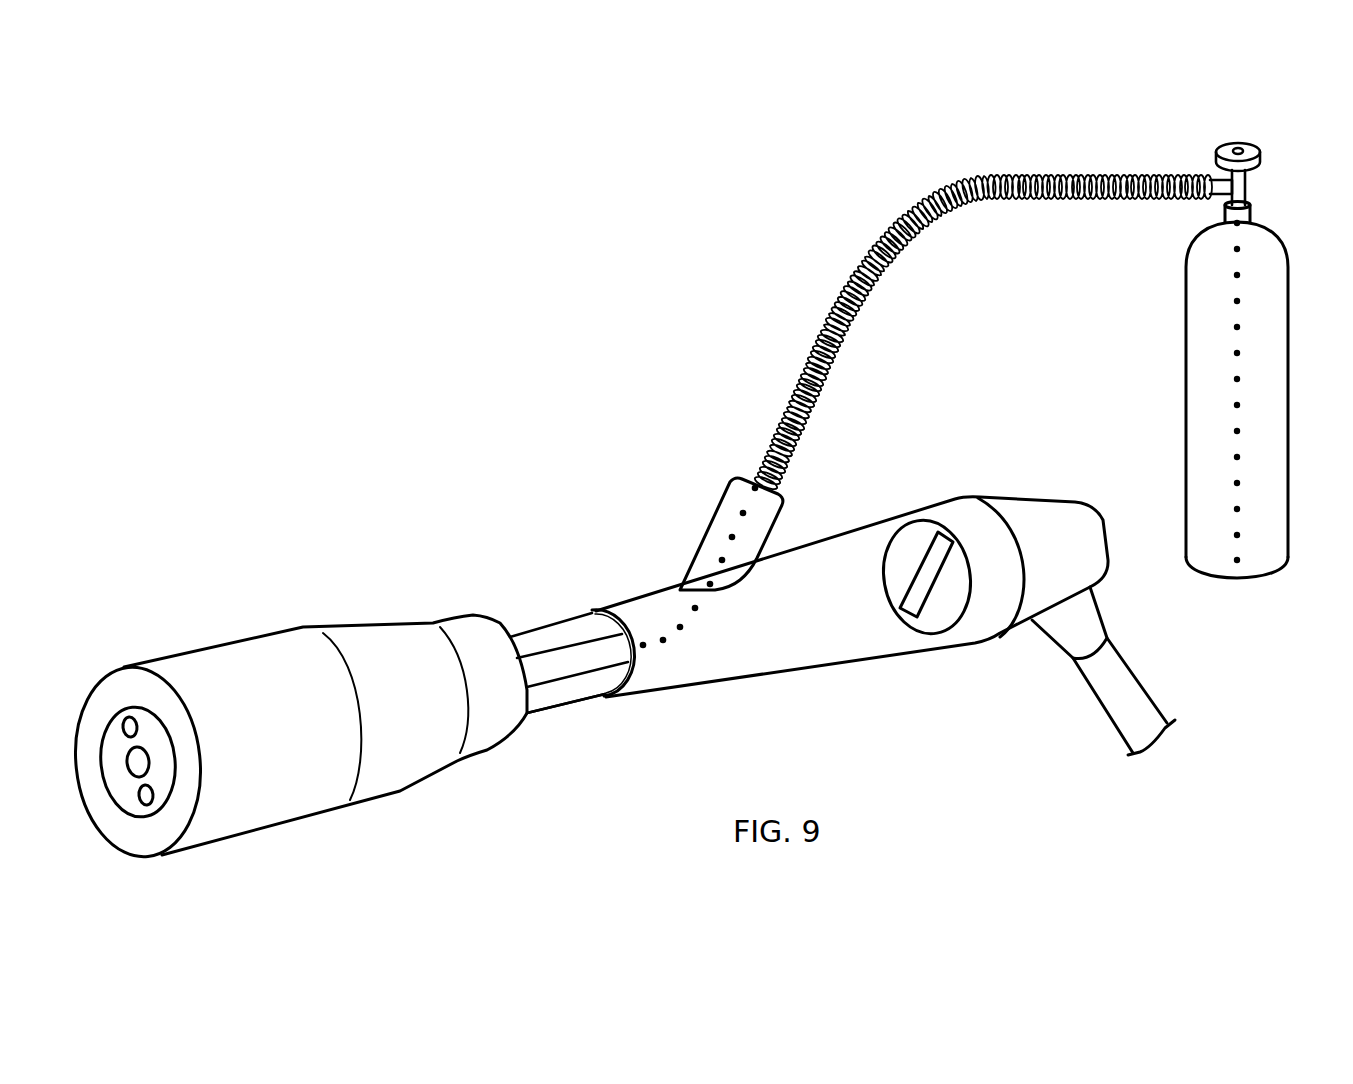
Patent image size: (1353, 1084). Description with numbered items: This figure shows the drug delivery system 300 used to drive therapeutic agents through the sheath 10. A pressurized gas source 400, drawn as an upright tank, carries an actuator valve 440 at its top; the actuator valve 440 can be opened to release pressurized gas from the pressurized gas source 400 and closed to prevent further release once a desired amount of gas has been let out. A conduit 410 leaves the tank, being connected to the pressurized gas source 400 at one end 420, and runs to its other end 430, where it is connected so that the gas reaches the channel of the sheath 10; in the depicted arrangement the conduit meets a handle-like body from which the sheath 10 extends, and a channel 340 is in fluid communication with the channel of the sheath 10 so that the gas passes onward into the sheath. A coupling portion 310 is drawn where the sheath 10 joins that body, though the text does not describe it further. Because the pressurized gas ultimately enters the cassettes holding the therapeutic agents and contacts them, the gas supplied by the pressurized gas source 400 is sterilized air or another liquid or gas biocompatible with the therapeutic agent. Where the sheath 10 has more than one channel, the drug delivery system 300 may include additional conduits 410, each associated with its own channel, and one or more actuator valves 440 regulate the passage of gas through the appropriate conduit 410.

The sheath 10 is at (270, 787).
The drug delivery system 300 is at (292, 600).
The coupling shaft 310 is at (552, 712).
The channel 340 is at (565, 658).
The pressurized gas source 400 is at (1185, 363).
The conduit 410 is at (826, 341).
The end 420 is at (1192, 173).
The another end 430 is at (750, 477).
The actuator valve 440 is at (1238, 147).